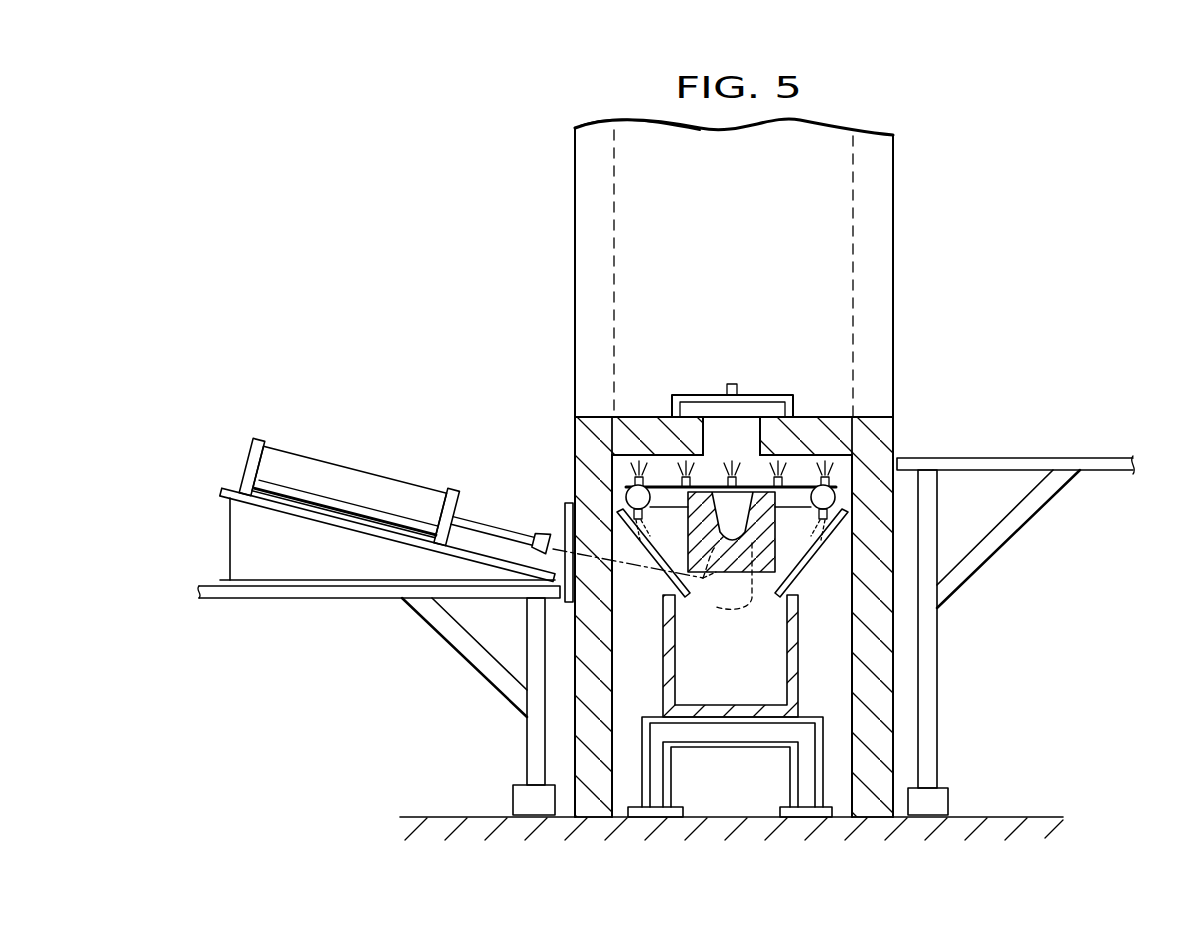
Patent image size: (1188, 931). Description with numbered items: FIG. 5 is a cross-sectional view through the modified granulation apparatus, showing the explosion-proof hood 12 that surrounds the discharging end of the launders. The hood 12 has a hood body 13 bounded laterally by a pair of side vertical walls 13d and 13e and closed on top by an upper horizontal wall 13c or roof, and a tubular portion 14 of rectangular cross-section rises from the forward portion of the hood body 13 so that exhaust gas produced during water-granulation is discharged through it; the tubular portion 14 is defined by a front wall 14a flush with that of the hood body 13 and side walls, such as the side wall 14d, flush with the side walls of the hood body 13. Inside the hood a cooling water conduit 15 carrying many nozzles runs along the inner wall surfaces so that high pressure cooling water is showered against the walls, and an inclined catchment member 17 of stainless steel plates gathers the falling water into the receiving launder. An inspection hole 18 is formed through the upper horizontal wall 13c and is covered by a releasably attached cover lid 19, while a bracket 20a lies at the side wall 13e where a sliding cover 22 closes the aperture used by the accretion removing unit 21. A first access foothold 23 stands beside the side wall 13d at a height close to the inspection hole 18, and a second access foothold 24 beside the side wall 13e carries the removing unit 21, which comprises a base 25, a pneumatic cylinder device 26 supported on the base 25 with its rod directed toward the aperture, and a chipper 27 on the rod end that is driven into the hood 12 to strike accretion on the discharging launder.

The explosion-proof hood 12 is at (1046, 182).
The hood body 13 is at (899, 415).
The upper horizontal wall 13c is at (648, 435).
The side vertical wall 13d is at (880, 662).
The side vertical wall 13e is at (590, 680).
The tubular portion 14 is at (900, 191).
The front wall 14a is at (598, 247).
The side wall 14d is at (880, 265).
The cooling water conduit 15 is at (828, 490).
The catchment member 17 is at (823, 560).
The inspection hole 18 is at (727, 440).
The cover lid 19 is at (769, 395).
The bracket 20a is at (567, 503).
The removing unit 21 is at (253, 426).
The cover 22 is at (597, 528).
The first access foothold 23 is at (1107, 449).
The second access foothold 24 is at (288, 606).
The base 25 is at (250, 533).
The pneumatic cylinder device 26 is at (333, 478).
The chipper 27 is at (545, 533).